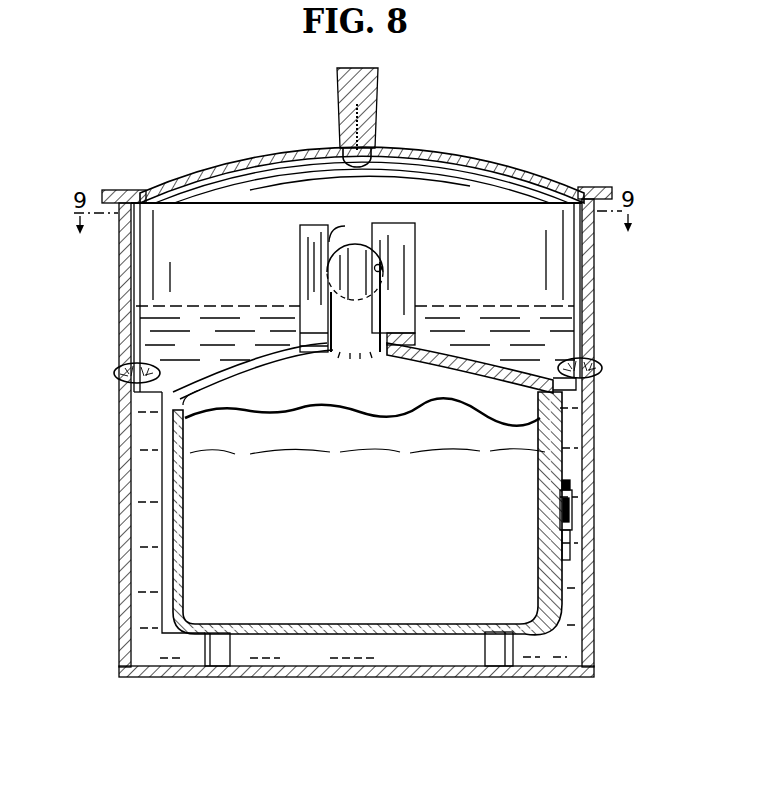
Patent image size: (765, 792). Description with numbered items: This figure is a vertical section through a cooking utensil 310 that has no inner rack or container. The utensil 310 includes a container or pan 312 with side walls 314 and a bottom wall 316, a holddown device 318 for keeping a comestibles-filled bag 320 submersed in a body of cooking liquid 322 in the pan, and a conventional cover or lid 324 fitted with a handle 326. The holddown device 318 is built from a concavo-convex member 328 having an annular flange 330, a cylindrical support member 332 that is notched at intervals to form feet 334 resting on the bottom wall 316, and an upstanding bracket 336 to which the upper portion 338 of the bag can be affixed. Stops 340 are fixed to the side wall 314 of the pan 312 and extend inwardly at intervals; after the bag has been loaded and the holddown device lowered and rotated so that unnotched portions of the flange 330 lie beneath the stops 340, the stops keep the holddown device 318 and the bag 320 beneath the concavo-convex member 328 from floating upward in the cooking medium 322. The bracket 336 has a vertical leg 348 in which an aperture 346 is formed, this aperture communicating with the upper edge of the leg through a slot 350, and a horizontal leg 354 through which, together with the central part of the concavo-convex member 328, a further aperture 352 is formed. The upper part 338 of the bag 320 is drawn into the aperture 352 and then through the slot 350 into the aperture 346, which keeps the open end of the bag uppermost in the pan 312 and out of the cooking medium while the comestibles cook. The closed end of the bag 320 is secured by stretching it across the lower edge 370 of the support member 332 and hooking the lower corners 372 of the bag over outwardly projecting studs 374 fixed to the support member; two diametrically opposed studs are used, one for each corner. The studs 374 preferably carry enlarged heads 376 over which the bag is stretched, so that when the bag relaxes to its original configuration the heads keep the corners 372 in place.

The utensil 310 is at (233, 132).
The container or pan 312 is at (114, 288).
The side walls 314 is at (119, 446).
The bottom wall 316 is at (200, 677).
The holddown device 318 is at (266, 334).
The comestibles-filled bag 320 is at (160, 488).
The cooking liquid 322 is at (580, 297).
The cover or lid 324 is at (446, 150).
The handle 326 is at (378, 82).
The concavo-convex member 328 is at (492, 352).
The annular flange 330 is at (576, 383).
The cylindrical support member 332 is at (552, 442).
The feet 334 is at (222, 660).
The upstanding bracket 336 is at (292, 265).
The upper portion of the bag 338 is at (360, 238).
The stops 340 is at (128, 370).
The aperture 346 is at (382, 270).
The vertical leg 348 is at (400, 223).
The slot 350 is at (348, 238).
The aperture 352 is at (372, 352).
The horizontal leg 354 is at (396, 333).
The lower edge 370 is at (260, 637).
The lower corners 372 is at (566, 480).
The studs 374 is at (578, 512).
The enlarged heads 376 is at (572, 532).